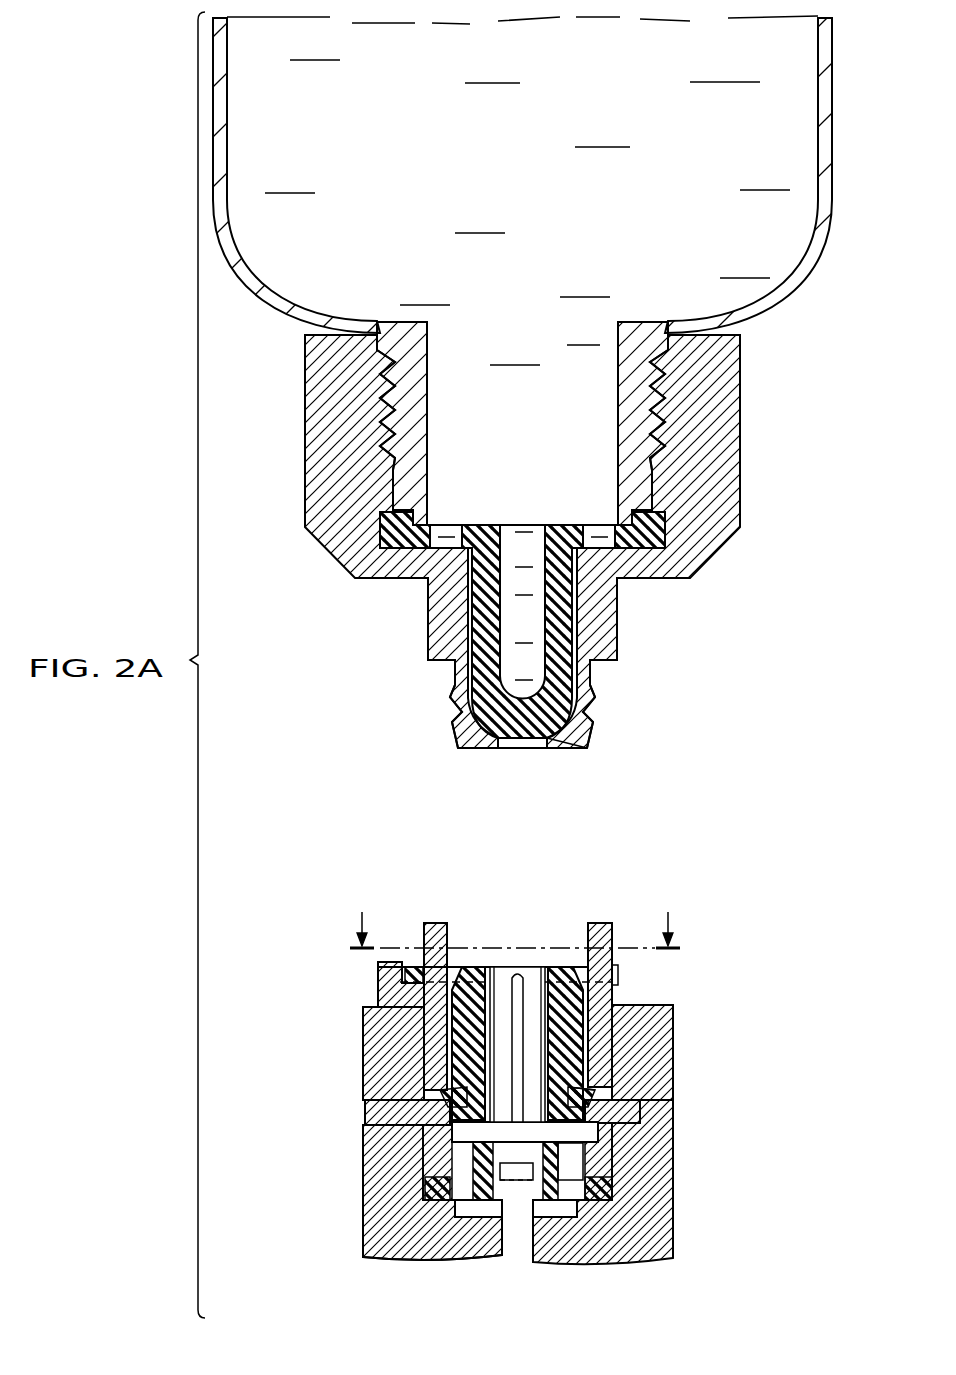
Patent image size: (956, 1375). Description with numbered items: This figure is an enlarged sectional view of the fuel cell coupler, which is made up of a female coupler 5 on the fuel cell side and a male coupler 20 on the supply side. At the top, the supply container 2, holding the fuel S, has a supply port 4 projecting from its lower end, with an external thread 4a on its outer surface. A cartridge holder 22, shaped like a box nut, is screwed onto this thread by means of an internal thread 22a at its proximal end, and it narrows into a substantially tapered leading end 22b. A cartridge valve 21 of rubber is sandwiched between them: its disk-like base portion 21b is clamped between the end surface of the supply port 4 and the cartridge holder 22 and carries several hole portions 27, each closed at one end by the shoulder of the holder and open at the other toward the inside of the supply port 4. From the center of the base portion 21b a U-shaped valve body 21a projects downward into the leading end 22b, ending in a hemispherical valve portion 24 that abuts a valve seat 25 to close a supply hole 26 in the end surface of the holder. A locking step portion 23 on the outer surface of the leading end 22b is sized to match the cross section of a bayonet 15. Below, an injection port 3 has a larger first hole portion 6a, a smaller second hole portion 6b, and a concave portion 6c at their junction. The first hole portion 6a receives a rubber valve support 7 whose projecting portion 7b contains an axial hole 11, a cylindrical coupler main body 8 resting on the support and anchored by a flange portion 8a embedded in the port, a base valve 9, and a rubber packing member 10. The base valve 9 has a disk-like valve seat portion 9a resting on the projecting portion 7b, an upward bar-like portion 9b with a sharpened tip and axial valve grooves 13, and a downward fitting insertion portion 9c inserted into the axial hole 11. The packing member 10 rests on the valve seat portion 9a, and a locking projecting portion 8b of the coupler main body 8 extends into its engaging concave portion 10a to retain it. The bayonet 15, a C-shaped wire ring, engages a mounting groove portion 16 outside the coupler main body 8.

The supply container 2 is at (833, 166).
The fuel S is at (577, 216).
The male coupler 20 is at (534, 572).
The cartridge holder 22 is at (745, 459).
The internal thread 22a is at (387, 458).
The leading end 22b is at (455, 700).
The supply port 4 is at (646, 400).
The external thread 4a is at (392, 396).
The cartridge valve 21 is at (560, 632).
The valve body 21a is at (467, 606).
The base portion 21b is at (490, 530).
The hole portions 27 is at (598, 531).
The locking step portion 23 is at (587, 716).
The valve portion 24 is at (548, 740).
The valve seat 25 is at (572, 745).
The supply hole 26 is at (506, 756).
The female coupler 5 is at (524, 1081).
The mounting groove portion 16 is at (400, 963).
The bayonet 15 is at (416, 960).
The first hole portion 6a is at (363, 1023).
The packing member 10 is at (570, 1027).
The engaging concave portion 10a is at (367, 1115).
The flange portion 8a is at (618, 1113).
The injection port 3 is at (675, 1232).
The base valve 9 is at (533, 1063).
The valve seat portion 9a is at (577, 1135).
The bar-like portion 9b is at (500, 1058).
The fitting insertion portion 9c is at (480, 1252).
The axial hole 11 is at (493, 988).
The valve grooves 13 is at (517, 985).
The coupler main body 8 is at (440, 1093).
The locking projecting portion 8b is at (573, 1098).
The projecting portion 7b is at (452, 1168).
The valve support 7 is at (562, 1168).
The second hole portion 6b is at (508, 1240).
The concave portion 6c is at (450, 1250).